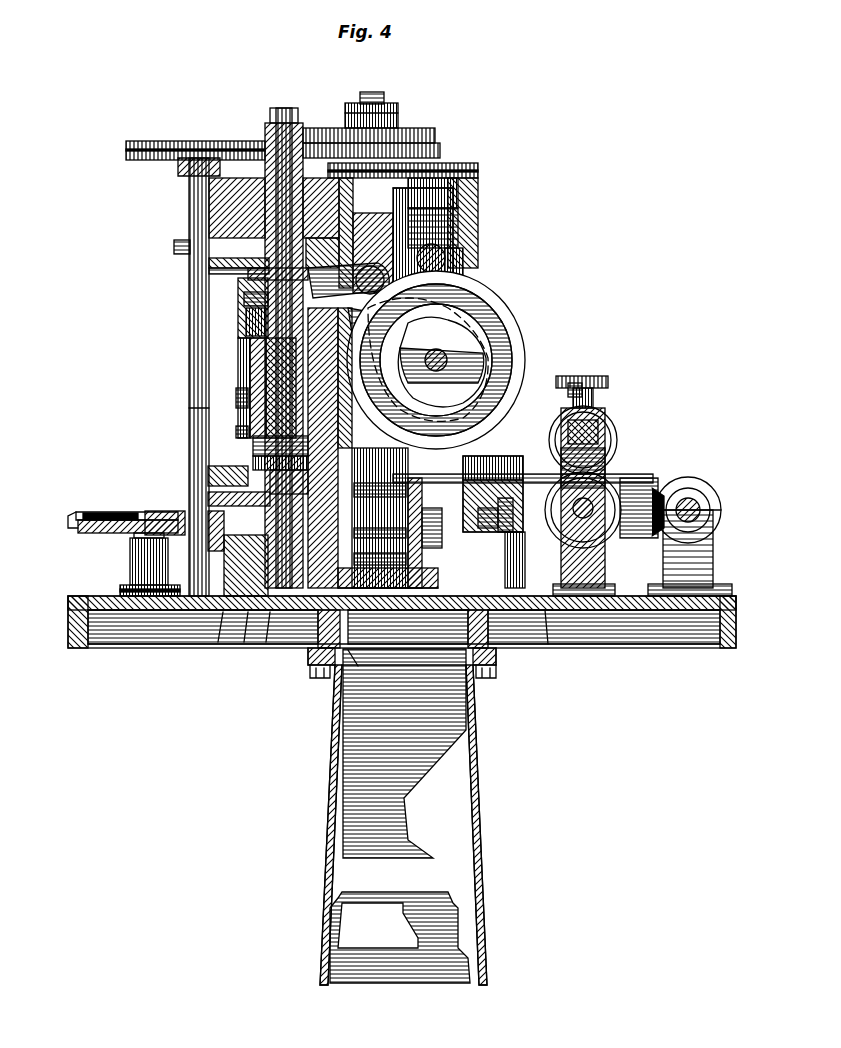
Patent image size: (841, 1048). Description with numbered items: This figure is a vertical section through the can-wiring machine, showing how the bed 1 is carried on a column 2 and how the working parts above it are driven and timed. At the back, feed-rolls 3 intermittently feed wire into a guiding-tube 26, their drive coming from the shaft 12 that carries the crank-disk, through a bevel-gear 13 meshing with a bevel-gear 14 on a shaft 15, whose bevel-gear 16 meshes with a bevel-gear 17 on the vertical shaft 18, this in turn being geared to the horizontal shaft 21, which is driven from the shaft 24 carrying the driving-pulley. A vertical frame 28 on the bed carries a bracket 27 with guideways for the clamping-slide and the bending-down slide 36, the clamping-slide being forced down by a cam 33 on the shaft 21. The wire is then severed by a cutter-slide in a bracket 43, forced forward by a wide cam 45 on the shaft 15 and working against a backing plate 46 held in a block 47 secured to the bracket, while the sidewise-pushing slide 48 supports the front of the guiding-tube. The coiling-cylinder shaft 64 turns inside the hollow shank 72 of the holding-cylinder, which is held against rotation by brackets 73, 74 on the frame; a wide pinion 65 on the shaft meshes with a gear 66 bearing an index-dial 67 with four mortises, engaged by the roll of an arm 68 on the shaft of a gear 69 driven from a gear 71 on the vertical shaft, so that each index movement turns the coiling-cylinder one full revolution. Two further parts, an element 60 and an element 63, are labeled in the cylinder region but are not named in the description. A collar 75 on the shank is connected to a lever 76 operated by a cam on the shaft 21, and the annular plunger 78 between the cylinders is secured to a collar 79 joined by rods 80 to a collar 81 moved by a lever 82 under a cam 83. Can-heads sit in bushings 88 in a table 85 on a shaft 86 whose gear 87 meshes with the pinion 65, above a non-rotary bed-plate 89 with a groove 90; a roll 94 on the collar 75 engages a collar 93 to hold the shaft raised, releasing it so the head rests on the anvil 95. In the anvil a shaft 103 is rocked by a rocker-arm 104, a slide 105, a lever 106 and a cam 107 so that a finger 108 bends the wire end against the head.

The bed 1 is at (648, 602).
The column 2 is at (478, 795).
The feed-rolls 3 is at (600, 462).
The shaft 12 is at (714, 500).
The bevel-gear 13 is at (705, 484).
The bevel-gear 14 is at (650, 480).
The shaft 15 is at (540, 636).
The bevel-gear 16 is at (405, 528).
The bevel-gear 17 is at (466, 458).
The vertical shaft 18 is at (455, 250).
The horizontal shaft 21 is at (452, 348).
The shaft 24 is at (445, 238).
The guiding-tube 26 is at (534, 580).
The bracket 27 is at (232, 390).
The vertical frame 28 is at (331, 522).
The cam 33 is at (342, 640).
The slide 36 is at (240, 332).
The bracket 43 is at (498, 556).
The cam 45 is at (462, 486).
The backing plate 46 is at (480, 500).
The block 47 is at (500, 490).
The sidewise-pushing slide 48 is at (380, 490).
The clutch 60 is at (245, 450).
The hub 63 is at (262, 472).
The coiling-cylinder shaft 64 is at (260, 347).
The wide pinion 65 is at (264, 118).
The gear 66 is at (442, 152).
The index-dial 67 is at (403, 128).
The arm 68 is at (338, 105).
The gear 69 is at (430, 130).
The gear 71 is at (472, 160).
The hollow shank 72 is at (200, 205).
The bracket 73 is at (200, 183).
The bracket 74 is at (232, 372).
The collar 75 is at (232, 280).
The lever 76 is at (355, 265).
The annular plunger 78 is at (245, 436).
The collar 79 is at (238, 420).
The rods 80 is at (238, 312).
The collar 81 is at (236, 292).
The lever 82 is at (436, 300).
The cam 83 is at (462, 318).
The table 85 is at (66, 504).
The shaft 86 is at (200, 408).
The gear 87 is at (186, 140).
The bushings 88 is at (100, 504).
The bed-plate 89 is at (70, 520).
The groove 90 is at (108, 520).
The collar 93 is at (166, 239).
The roll 94 is at (200, 256).
The anvil 95 is at (380, 539).
The shaft 103 is at (260, 632).
The rocker-arm 104 is at (238, 640).
The slide 105 is at (212, 630).
The lever 106 is at (200, 493).
The cam 107 is at (200, 465).
The finger 108 is at (380, 558).